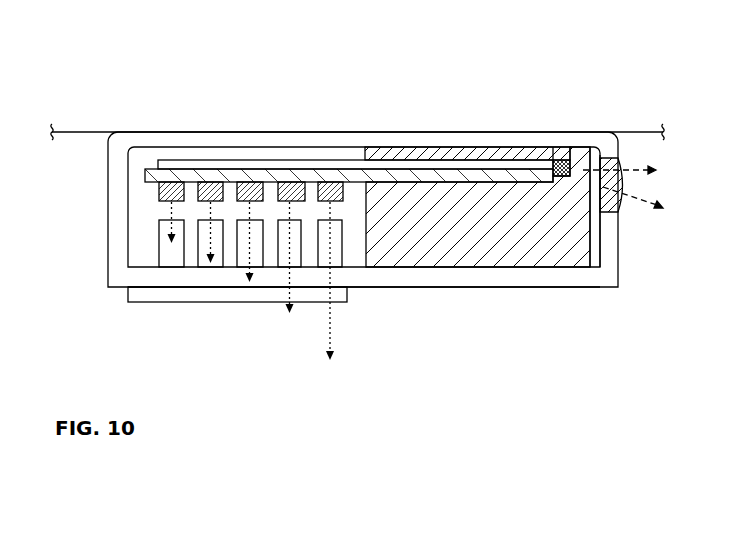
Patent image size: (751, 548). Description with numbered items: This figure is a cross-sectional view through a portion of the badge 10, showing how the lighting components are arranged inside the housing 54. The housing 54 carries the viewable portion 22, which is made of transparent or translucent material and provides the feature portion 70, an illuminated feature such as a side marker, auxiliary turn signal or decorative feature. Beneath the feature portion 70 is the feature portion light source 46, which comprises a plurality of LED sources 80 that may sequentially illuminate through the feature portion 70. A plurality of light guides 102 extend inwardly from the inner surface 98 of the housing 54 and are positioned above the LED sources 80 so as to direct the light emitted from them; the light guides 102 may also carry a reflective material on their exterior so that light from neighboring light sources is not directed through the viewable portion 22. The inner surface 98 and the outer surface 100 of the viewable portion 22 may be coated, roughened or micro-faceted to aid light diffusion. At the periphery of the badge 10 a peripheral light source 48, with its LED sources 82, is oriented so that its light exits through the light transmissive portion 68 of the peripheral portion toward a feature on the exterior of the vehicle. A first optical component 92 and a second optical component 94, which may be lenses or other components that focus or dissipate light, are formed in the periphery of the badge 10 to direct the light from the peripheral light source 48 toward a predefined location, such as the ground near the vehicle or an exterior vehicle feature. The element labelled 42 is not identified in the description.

The badge 10 is at (216, 122).
The viewable portion 22 is at (376, 306).
The top plate 42 is at (462, 165).
The feature portion light source 46 is at (338, 179).
The peripheral light source 48 is at (565, 163).
The housing 54 is at (123, 230).
The light transmissive portion 68 is at (618, 178).
The feature portion 70 is at (235, 307).
The LED sources 80 is at (210, 181).
The LED sources 82 is at (575, 152).
The first optical component 92 is at (465, 232).
The second optical component 94 is at (622, 204).
The inner surface 98 is at (590, 270).
The outer surface 100 is at (533, 288).
The light guides 102 is at (175, 255).